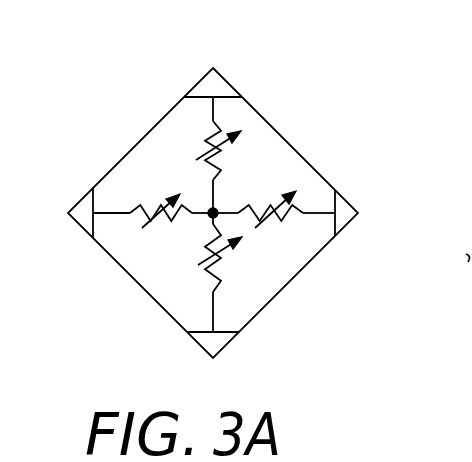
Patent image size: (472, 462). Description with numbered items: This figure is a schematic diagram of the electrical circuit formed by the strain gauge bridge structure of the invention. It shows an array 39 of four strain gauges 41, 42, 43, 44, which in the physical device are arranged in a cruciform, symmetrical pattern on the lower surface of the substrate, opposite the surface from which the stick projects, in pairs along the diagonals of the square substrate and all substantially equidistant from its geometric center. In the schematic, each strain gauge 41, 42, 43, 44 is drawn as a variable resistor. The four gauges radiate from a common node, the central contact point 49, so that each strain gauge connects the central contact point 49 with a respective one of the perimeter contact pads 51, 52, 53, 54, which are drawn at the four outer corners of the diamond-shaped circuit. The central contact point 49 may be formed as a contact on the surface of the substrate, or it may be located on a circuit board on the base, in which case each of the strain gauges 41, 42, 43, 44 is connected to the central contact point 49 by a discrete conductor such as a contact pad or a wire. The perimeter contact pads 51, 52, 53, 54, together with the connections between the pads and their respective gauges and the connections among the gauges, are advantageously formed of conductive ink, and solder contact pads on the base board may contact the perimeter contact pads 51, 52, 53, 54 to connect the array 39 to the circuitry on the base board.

The array of strain gauges 39 is at (338, 128).
The strain gauge 41 is at (219, 158).
The strain gauge 42 is at (220, 268).
The strain gauge 43 is at (148, 212).
The strain gauge 44 is at (256, 222).
The central contact point 49 is at (209, 218).
The perimeter contact pad 51 is at (212, 84).
The perimeter contact pad 52 is at (222, 343).
The perimeter contact pad 53 is at (82, 206).
The perimeter contact pad 54 is at (342, 201).